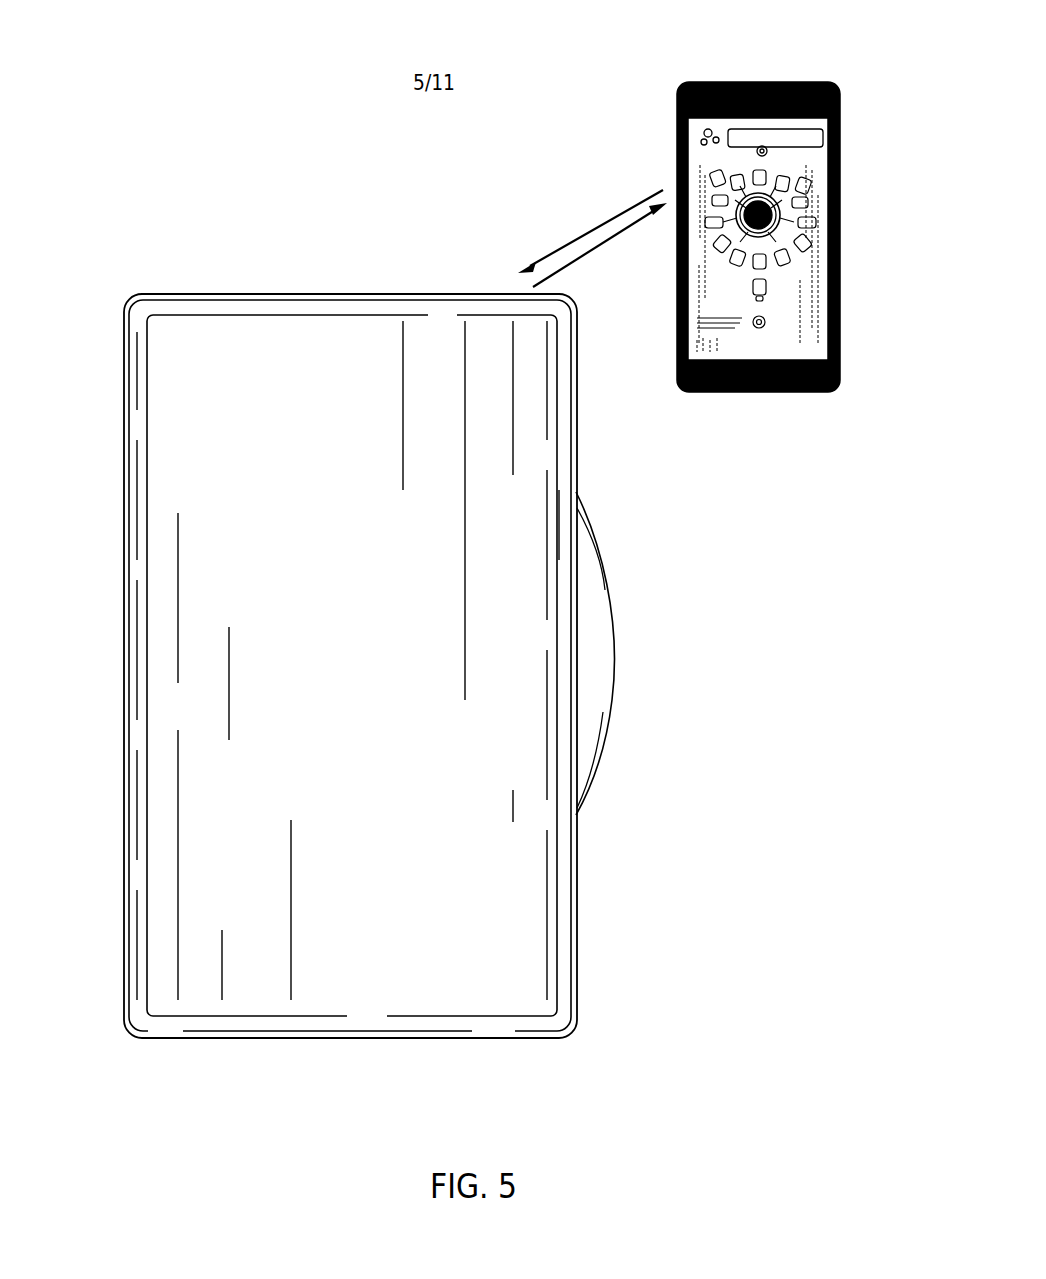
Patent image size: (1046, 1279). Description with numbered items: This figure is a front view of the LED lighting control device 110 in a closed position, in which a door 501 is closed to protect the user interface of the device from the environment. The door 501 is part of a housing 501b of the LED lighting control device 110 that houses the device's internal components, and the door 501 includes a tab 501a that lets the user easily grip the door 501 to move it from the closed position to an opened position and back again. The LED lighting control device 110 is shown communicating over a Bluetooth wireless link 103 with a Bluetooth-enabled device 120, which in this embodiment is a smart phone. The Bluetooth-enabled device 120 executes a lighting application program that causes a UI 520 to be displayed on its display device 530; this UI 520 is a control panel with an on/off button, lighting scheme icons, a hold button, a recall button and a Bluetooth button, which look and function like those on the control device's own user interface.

The LED lighting control device 110 is at (121, 284).
The Bluetooth-enabled device 120 is at (663, 84).
The Bluetooth wireless link 103 is at (539, 206).
The door 501 is at (570, 474).
The tab 501a is at (608, 630).
The housing 501b is at (300, 294).
The UI 520 is at (815, 167).
The display device 530 is at (798, 292).